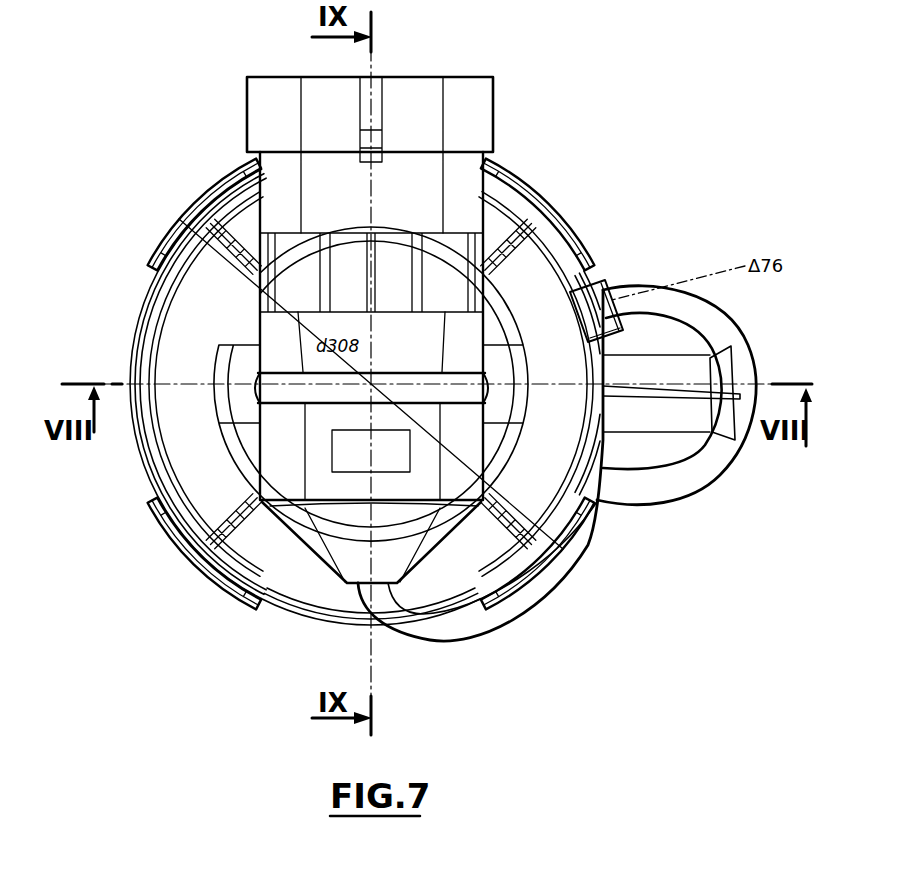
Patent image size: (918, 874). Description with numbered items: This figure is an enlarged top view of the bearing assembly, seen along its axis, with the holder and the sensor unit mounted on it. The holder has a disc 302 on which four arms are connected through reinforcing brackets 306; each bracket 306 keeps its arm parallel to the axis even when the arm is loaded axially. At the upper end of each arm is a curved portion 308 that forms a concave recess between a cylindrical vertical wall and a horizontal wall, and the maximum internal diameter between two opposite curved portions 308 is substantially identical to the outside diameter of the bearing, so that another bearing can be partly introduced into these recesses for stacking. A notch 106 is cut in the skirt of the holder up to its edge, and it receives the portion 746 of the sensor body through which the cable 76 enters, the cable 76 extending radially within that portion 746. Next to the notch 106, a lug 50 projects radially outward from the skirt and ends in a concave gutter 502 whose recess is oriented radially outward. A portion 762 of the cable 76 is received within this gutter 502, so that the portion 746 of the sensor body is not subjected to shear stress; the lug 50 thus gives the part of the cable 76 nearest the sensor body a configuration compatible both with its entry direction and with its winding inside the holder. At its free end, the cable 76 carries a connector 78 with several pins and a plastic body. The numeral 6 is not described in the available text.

The hand-held apparatus 6 is at (657, 132).
The lug 50 is at (673, 367).
The cable 76 is at (687, 470).
The connector 78 is at (282, 462).
The notch 106 is at (578, 270).
The disc 302 is at (180, 333).
The reinforcing bracket 306 is at (178, 292).
The curved portion 308 is at (203, 208).
The concave gutter 502 is at (743, 362).
The portion of sensor body 746 is at (598, 297).
The portion of cable 762 is at (743, 438).